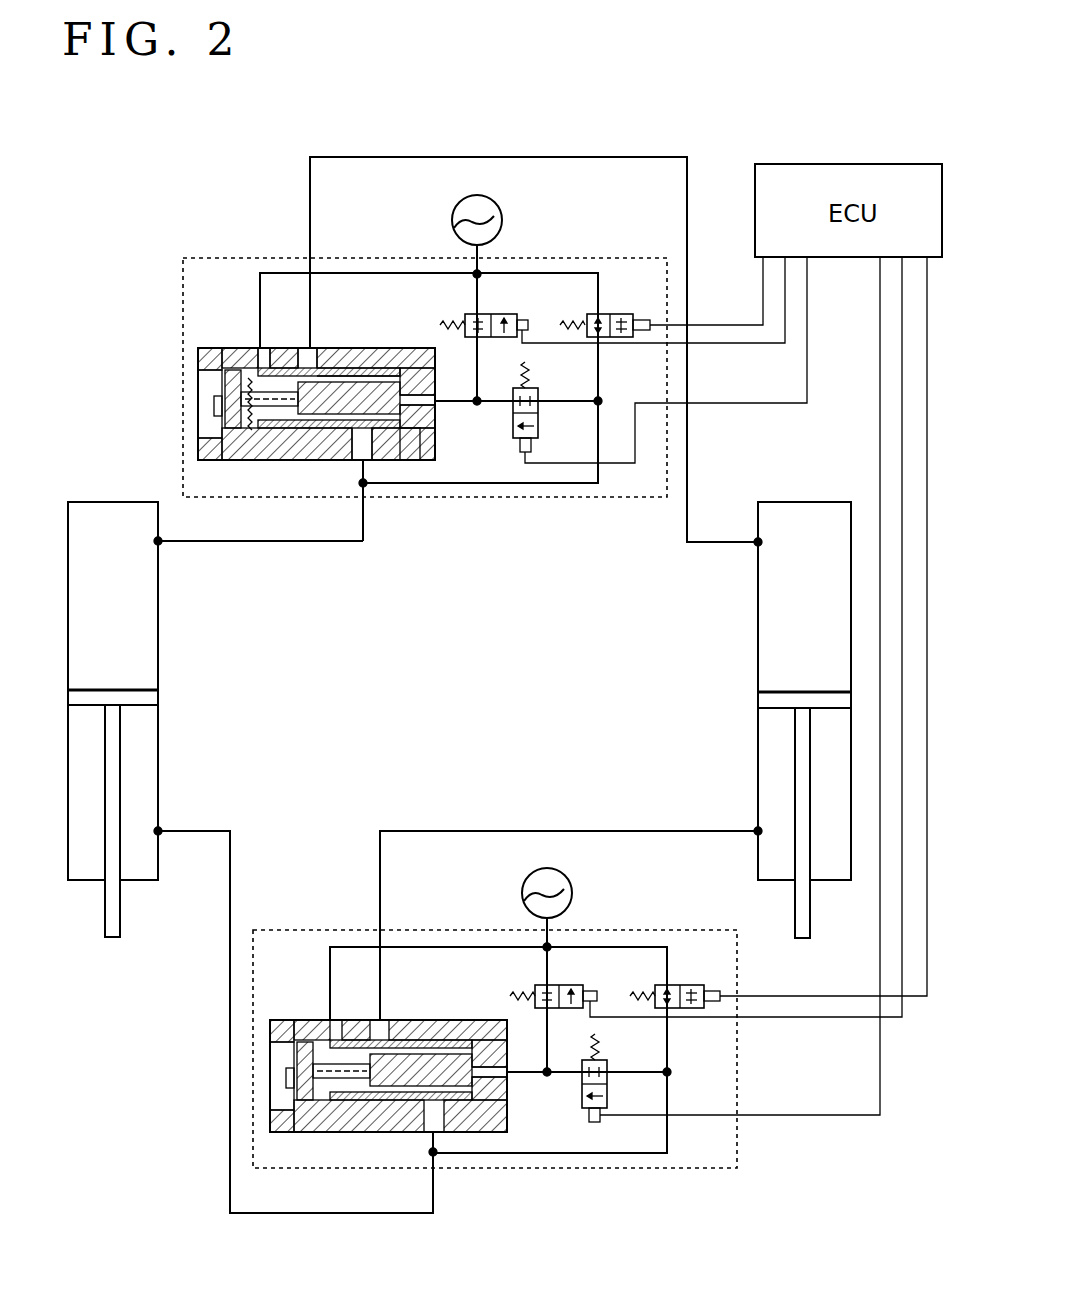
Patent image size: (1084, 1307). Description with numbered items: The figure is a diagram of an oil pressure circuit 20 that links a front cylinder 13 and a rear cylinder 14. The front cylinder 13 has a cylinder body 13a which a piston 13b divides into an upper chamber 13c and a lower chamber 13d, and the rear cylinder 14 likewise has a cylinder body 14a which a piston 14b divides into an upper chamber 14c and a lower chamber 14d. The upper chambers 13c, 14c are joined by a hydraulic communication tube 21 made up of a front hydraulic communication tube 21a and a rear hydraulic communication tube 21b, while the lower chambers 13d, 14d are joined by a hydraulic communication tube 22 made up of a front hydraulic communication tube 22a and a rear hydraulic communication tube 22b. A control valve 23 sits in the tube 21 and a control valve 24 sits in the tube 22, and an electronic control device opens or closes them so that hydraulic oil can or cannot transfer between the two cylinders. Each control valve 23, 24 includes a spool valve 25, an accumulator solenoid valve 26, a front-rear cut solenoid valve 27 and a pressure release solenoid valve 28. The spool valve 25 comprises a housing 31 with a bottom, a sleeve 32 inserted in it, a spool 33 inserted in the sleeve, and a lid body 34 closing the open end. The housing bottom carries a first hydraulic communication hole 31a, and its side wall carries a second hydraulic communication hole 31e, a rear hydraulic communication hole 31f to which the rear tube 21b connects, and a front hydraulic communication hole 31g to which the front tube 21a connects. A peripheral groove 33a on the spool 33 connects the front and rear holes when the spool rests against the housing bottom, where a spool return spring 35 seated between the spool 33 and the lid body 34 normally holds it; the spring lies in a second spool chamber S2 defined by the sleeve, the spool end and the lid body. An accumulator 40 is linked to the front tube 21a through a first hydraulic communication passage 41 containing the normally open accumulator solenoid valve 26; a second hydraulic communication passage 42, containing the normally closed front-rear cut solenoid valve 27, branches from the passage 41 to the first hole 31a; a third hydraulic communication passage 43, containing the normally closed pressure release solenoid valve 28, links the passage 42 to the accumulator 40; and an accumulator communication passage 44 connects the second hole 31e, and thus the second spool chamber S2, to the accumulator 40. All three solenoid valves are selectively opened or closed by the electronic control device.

The front cylinder 13 is at (69, 510).
The cylinder body 13a is at (160, 610).
The piston 13b is at (123, 768).
The upper chamber 13c is at (138, 649).
The lower chamber 13d is at (100, 754).
The rear cylinder 14 is at (850, 510).
The cylinder body 14a is at (757, 610).
The piston 14b is at (796, 772).
The upper chamber 14c is at (840, 649).
The lower chamber 14d is at (844, 754).
The oil pressure circuit 20 is at (262, 181).
The hydraulic communication tube 21 is at (242, 543).
The front hydraulic communication tube 21a is at (365, 520).
The rear hydraulic communication tube 21b is at (687, 464).
The hydraulic communication tube 22 is at (191, 834).
The front hydraulic communication tube 22a is at (231, 850).
The rear hydraulic communication tube 22b is at (627, 828).
The control valve 23 is at (215, 258).
The control valve 24 is at (286, 928).
The spool valve 25 is at (408, 360).
The accumulator solenoid valve 26 is at (616, 314).
The front-rear cut solenoid valve 27 is at (538, 402).
The pressure release solenoid valve 28 is at (504, 314).
The housing 31 is at (437, 446).
The first hydraulic communication hole 31a is at (436, 410).
The second hydraulic communication hole 31e is at (258, 348).
The rear hydraulic communication hole 31f is at (314, 348).
The front hydraulic communication hole 31g is at (358, 482).
The sleeve 32 is at (271, 458).
The spool 33 is at (435, 396).
The peripheral groove 33a is at (356, 374).
The lid body 34 is at (222, 358).
The spool return spring 35 is at (227, 452).
The accumulator 40 is at (503, 212).
The first hydraulic communication passage 41 is at (600, 378).
The second hydraulic communication passage 42 is at (558, 404).
The third hydraulic communication passage 43 is at (464, 300).
The accumulator communication passage 44 is at (382, 273).
The second spool chamber S2 is at (295, 380).